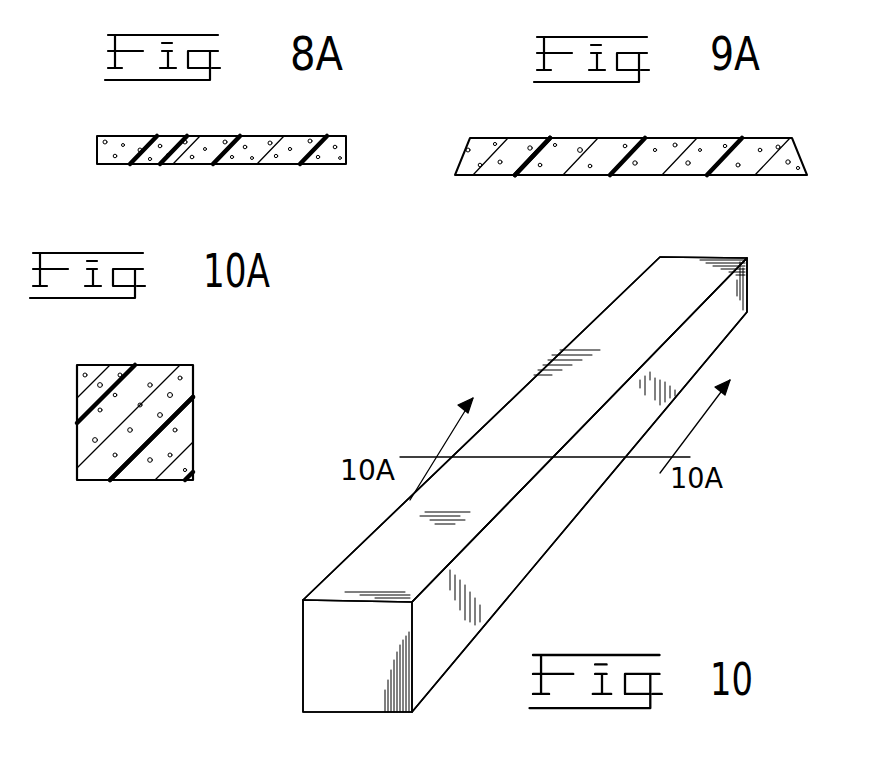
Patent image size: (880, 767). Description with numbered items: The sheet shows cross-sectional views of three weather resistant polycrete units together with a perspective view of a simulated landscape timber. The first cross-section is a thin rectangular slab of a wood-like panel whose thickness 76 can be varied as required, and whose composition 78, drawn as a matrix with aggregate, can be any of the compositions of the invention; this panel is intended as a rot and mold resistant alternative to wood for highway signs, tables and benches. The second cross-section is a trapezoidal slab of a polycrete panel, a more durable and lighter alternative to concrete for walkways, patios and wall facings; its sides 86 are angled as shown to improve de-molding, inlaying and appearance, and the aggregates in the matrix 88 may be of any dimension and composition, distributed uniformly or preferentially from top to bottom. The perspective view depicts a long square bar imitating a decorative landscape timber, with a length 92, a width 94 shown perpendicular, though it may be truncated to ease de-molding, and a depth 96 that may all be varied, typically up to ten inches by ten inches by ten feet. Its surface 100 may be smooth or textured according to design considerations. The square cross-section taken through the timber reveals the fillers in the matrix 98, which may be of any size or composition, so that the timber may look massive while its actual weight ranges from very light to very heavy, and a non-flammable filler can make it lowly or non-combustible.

In FIG. 8A, the thickness 76 is at (346, 149).
In FIG. 8A, the composition 78 is at (237, 155).
In FIG. 9A, the sides 86 is at (805, 112).
In FIG. 9A, the matrix 88 is at (585, 160).
In FIG. 10, the length 92 is at (563, 530).
In FIG. 10, the width 94 is at (318, 712).
In FIG. 10A, the depth 96 is at (193, 400).
In FIG. 10A, the matrix 98 is at (130, 458).
In FIG. 10, the surface 100 is at (377, 577).